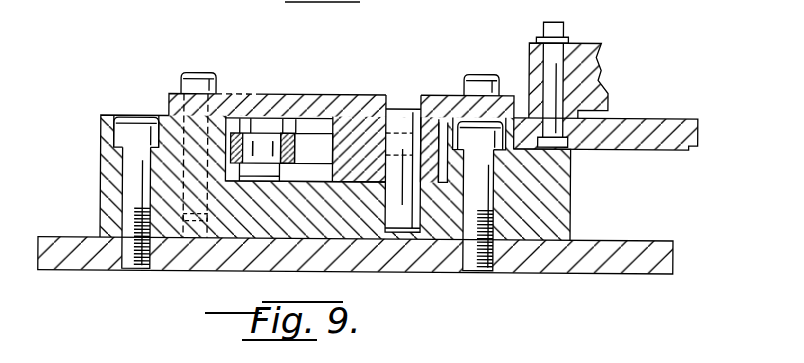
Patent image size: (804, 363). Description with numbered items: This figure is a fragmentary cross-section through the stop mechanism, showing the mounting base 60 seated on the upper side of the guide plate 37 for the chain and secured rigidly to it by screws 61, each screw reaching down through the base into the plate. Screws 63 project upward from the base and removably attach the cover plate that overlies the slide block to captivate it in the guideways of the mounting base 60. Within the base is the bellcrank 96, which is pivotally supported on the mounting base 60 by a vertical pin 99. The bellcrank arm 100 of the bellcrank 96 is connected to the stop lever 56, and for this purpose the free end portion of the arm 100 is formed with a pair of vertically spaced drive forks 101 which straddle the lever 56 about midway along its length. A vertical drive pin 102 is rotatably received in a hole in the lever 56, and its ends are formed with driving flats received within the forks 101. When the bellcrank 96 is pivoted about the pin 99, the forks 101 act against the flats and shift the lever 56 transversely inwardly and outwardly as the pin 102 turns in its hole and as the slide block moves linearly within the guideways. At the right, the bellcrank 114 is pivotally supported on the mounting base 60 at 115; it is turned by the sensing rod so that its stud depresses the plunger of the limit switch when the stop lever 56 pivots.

The guide plate 37 is at (76, 270).
The mounting base 60 is at (562, 202).
The screws 61 is at (130, 168).
The screws 63 is at (190, 72).
The bellcrank 96 is at (367, 115).
The vertical pin 99 is at (402, 114).
The bellcrank arm 100 is at (349, 171).
The drive forks 101 is at (307, 165).
The drive pin 102 is at (268, 117).
The stop lever 56 is at (290, 162).
The bellcrank 114 is at (597, 69).
The pivot 115 is at (560, 22).